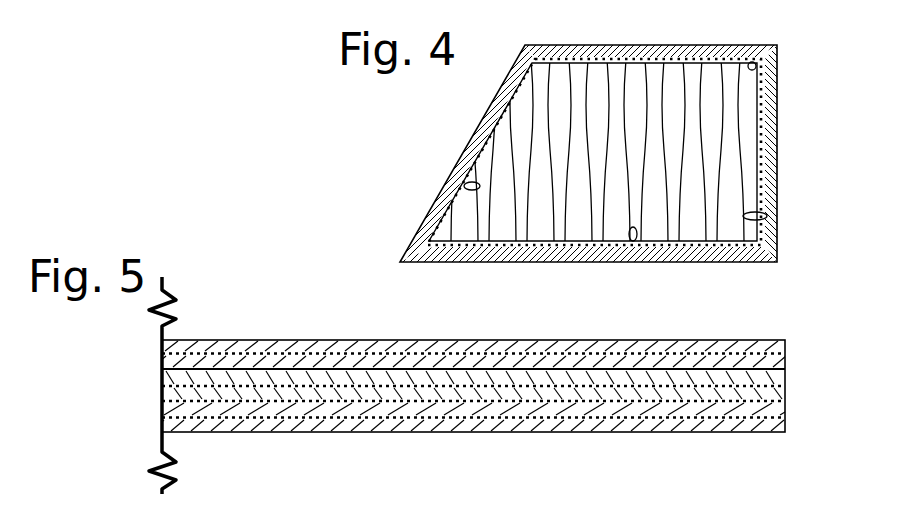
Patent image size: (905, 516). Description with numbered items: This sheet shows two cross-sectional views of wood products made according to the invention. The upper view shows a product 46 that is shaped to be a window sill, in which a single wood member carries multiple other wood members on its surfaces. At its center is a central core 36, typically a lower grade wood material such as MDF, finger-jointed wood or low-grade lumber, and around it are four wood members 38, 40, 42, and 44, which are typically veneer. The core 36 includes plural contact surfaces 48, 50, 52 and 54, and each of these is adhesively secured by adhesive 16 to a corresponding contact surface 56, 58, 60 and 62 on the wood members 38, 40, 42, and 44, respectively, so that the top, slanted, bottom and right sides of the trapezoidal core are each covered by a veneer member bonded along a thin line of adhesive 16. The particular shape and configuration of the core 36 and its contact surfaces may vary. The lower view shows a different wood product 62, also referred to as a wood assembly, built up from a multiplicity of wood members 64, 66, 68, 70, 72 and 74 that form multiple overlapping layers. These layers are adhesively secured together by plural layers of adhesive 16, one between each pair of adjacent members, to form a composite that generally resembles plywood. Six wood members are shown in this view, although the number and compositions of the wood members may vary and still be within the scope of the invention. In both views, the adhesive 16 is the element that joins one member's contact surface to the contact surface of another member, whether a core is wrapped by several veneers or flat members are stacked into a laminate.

In FIG. 4, the adhesive 16 is at (778, 47).
In FIG. 5, the adhesive 16 is at (162, 417).
In FIG. 4, the central core 36 is at (614, 162).
In FIG. 4, the wood member 38 is at (571, 45).
In FIG. 4, the wood member 40 is at (779, 143).
In FIG. 4, the wood member 42 is at (488, 263).
In FIG. 4, the wood member 44 is at (450, 172).
In FIG. 4, the product 46 is at (454, 112).
In FIG. 4, the contact surface 48 is at (668, 60).
In FIG. 4, the contact surface 50 is at (767, 177).
In FIG. 4, the contact surface 52 is at (703, 255).
In FIG. 4, the contact surface 54 is at (440, 209).
In FIG. 4, the contact surface 56 is at (750, 62).
In FIG. 4, the contact surface 58 is at (762, 222).
In FIG. 4, the contact surface 60 is at (631, 241).
In FIG. 4, the wood product 62 is at (470, 184).
In FIG. 5, the wood product 62 is at (100, 344).
In FIG. 5, the wood member 64 is at (787, 346).
In FIG. 5, the wood member 66 is at (787, 361).
In FIG. 5, the wood member 68 is at (787, 378).
In FIG. 5, the wood member 70 is at (787, 393).
In FIG. 5, the wood member 72 is at (787, 408).
In FIG. 5, the wood member 74 is at (787, 425).